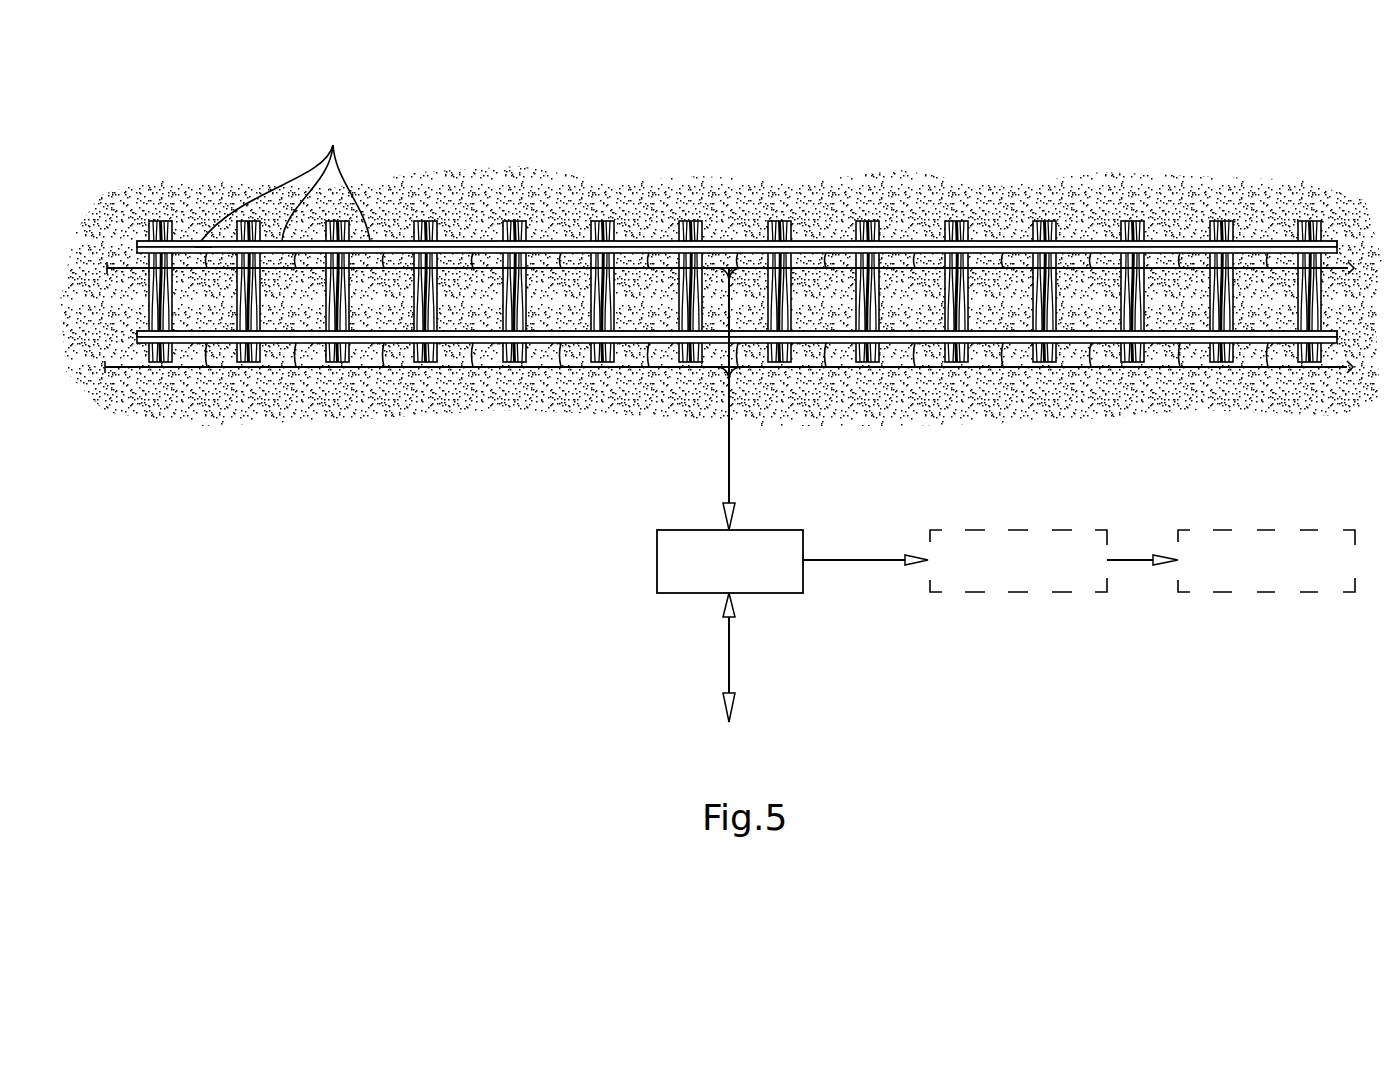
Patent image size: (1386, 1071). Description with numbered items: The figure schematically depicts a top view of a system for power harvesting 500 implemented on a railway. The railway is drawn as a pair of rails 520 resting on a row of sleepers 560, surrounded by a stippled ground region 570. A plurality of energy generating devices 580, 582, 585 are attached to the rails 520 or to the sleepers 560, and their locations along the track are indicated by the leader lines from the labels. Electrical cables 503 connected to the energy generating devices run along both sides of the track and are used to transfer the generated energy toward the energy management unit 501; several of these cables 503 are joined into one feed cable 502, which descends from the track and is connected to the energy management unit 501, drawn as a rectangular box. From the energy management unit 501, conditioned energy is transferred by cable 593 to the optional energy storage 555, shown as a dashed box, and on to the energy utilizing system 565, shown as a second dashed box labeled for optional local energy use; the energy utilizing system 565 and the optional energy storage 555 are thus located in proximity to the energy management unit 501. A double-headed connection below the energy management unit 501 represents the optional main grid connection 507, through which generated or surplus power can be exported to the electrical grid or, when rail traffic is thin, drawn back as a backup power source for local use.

The system for power harvesting 500 is at (493, 93).
The energy management unit 501 is at (657, 562).
The feed cable 502 is at (729, 450).
The electrical cables 503 is at (627, 245).
The optional main grid connection 507 is at (729, 650).
The rails 520 is at (533, 240).
The optional energy storage 555 is at (1063, 593).
The sleepers 560 is at (420, 363).
The energy utilizing system 565 is at (1182, 593).
The ground ballast 570 is at (815, 212).
The energy generating device 580 is at (310, 179).
The energy generating device 582 is at (307, 193).
The energy generating device 585 is at (351, 193).
The cable 593 is at (873, 565).